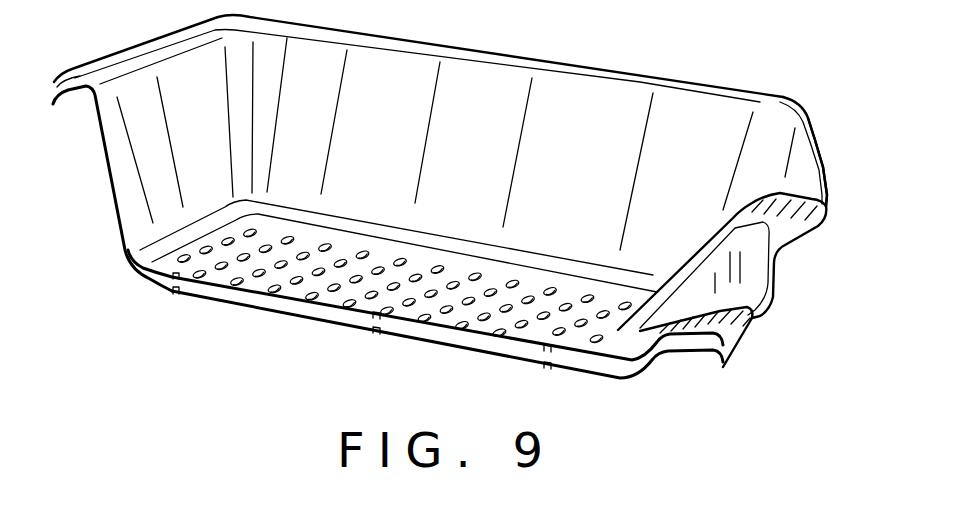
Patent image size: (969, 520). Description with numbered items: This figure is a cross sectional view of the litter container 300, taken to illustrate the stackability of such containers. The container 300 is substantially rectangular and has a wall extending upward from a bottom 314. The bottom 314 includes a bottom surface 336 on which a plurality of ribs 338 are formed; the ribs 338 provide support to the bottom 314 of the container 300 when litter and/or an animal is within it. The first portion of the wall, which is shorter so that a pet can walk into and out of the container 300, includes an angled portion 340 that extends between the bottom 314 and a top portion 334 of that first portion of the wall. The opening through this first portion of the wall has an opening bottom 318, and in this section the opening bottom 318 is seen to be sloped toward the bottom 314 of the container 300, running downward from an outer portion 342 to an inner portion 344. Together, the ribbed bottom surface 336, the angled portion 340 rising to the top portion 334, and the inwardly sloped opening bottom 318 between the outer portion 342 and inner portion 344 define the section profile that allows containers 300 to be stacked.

The litter container 300 is at (461, 231).
The bottom 314 is at (352, 277).
The opening bottom 318 is at (722, 236).
The top portion 334 is at (828, 211).
The bottom surface 336 is at (455, 339).
The ribs 338 is at (178, 292).
The angled portion 340 is at (710, 242).
The outer portion 342 is at (733, 330).
The inner portion 344 is at (640, 331).